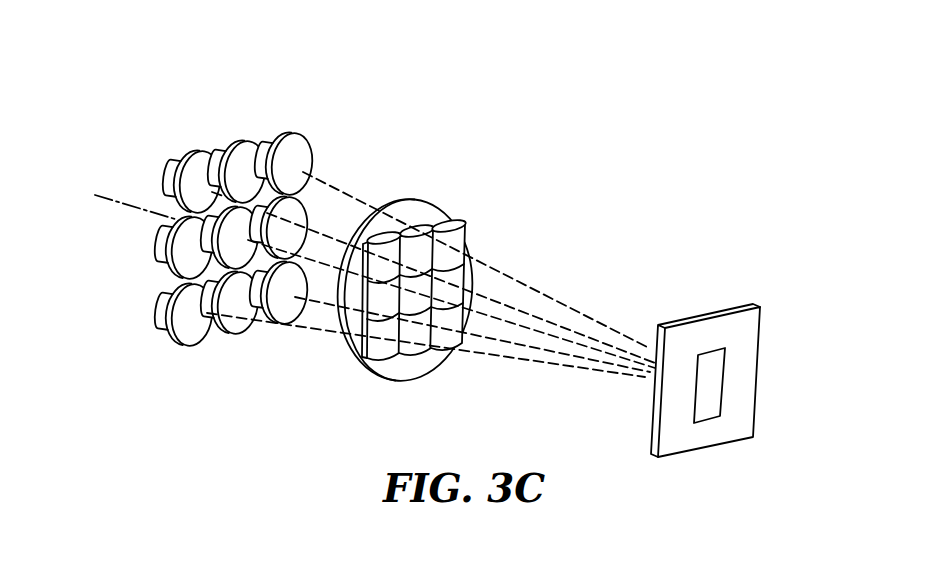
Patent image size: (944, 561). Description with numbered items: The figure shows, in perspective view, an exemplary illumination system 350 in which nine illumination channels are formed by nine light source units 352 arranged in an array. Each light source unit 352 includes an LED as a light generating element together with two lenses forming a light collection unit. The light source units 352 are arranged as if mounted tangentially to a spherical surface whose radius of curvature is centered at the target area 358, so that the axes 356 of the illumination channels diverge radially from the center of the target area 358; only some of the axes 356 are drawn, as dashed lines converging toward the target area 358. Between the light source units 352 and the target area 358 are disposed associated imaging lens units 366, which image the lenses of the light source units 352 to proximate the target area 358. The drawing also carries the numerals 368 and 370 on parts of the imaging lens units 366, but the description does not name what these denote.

The illumination system 350 is at (531, 63).
The light source units 352 is at (291, 142).
The axes 356 is at (320, 232).
The target area 358 is at (740, 310).
The imaging lens units 366 is at (438, 163).
The lens disc 368 is at (348, 356).
The lenslet array 370 is at (417, 226).